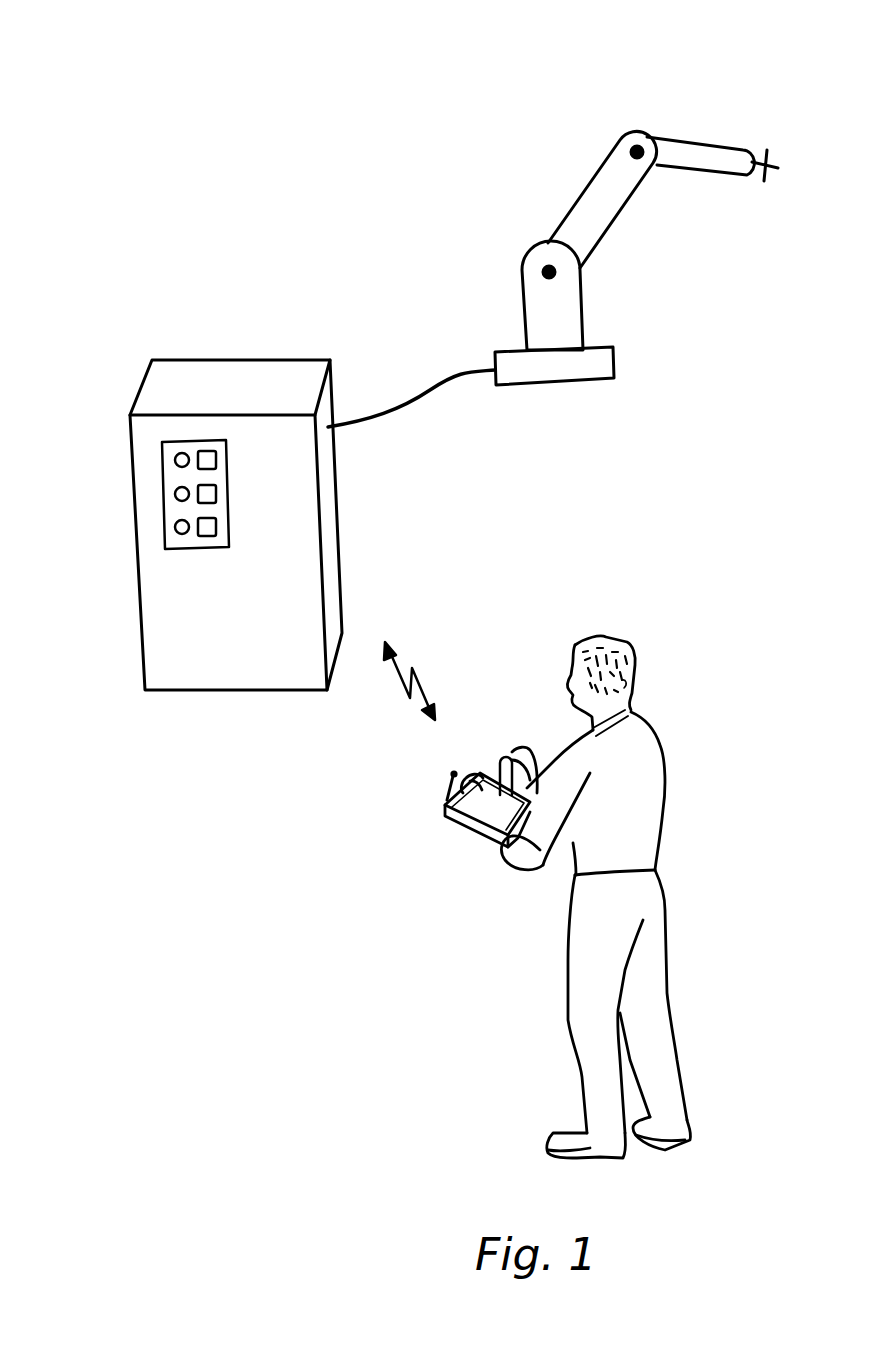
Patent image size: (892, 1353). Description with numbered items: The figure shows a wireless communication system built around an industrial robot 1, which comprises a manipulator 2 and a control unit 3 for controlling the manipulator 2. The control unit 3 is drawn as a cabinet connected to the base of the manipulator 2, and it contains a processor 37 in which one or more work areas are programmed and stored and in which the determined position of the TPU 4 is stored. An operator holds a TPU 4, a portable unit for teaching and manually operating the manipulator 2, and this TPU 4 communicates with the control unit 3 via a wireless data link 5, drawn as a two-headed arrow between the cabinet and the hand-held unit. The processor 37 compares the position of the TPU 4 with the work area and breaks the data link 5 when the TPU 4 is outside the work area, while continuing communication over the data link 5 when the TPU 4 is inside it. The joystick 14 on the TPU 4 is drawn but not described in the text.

The industrial robot 1 is at (468, 88).
The manipulator 2 is at (622, 217).
The control unit 3 is at (198, 483).
The processor 37 is at (173, 582).
The TPU 4 is at (499, 750).
The wireless data link 5 is at (410, 677).
The joystick 14 is at (522, 753).